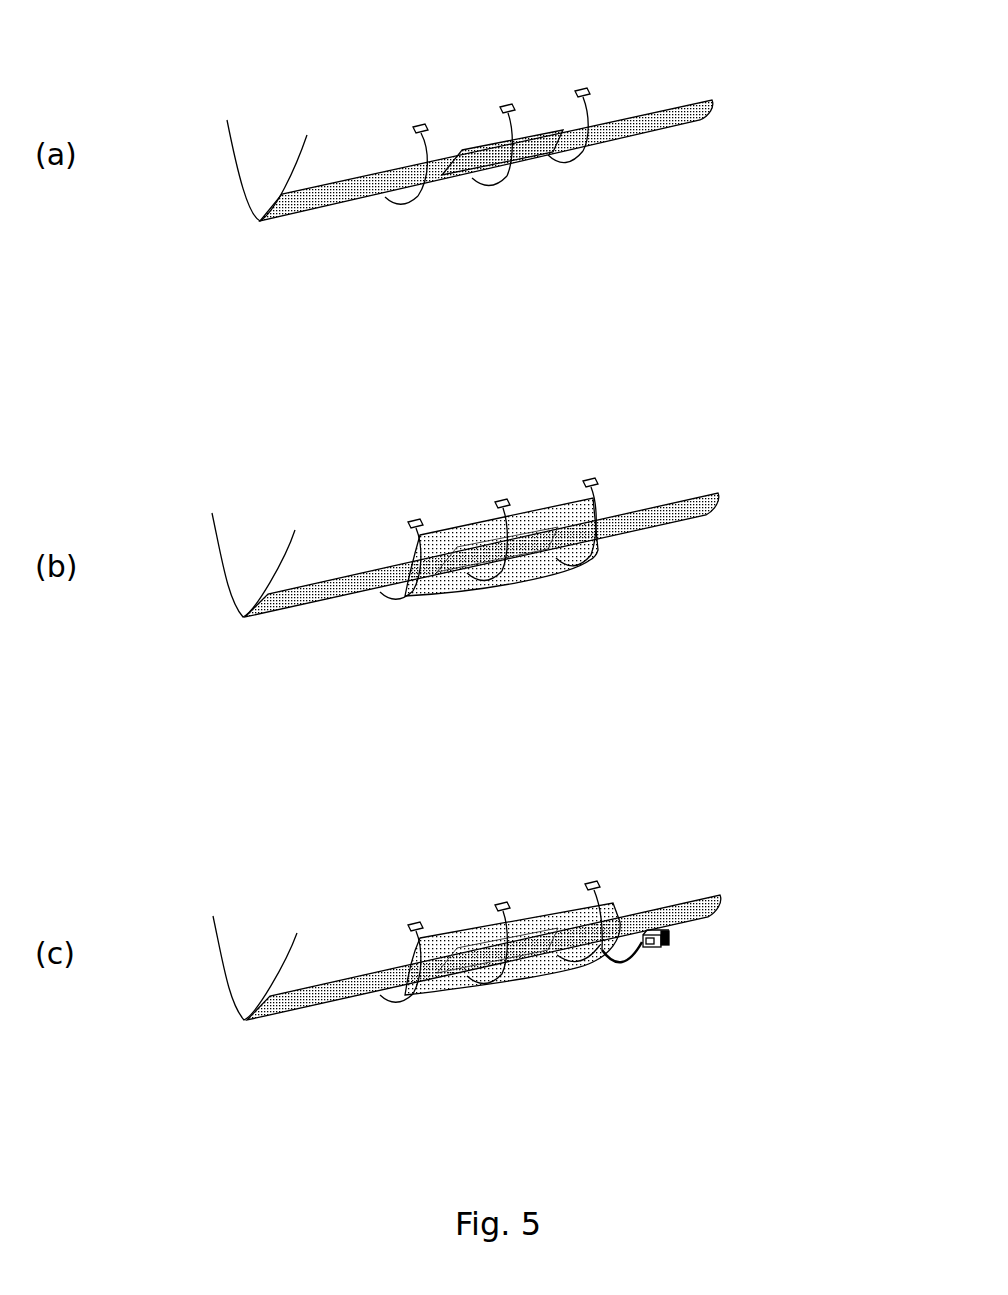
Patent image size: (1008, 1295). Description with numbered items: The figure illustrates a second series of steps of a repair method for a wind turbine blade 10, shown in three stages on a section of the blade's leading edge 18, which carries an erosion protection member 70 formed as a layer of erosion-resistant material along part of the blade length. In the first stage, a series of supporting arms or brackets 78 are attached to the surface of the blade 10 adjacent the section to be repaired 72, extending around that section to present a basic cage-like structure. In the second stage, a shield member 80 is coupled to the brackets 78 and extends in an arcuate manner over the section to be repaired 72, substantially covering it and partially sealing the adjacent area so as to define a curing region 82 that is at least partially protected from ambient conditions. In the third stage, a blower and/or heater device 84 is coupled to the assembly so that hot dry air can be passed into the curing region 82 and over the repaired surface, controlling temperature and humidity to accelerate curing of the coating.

The wind turbine blade 10 is at (247, 164).
The leading edge 18 is at (256, 223).
The erosion protection member 70 is at (688, 116).
The section to be repaired 72 is at (540, 104).
The supporting arms or brackets 78 is at (566, 165).
The shield member 80 is at (450, 537).
The curing region 82 is at (605, 582).
The blower and/or heater device 84 is at (660, 947).